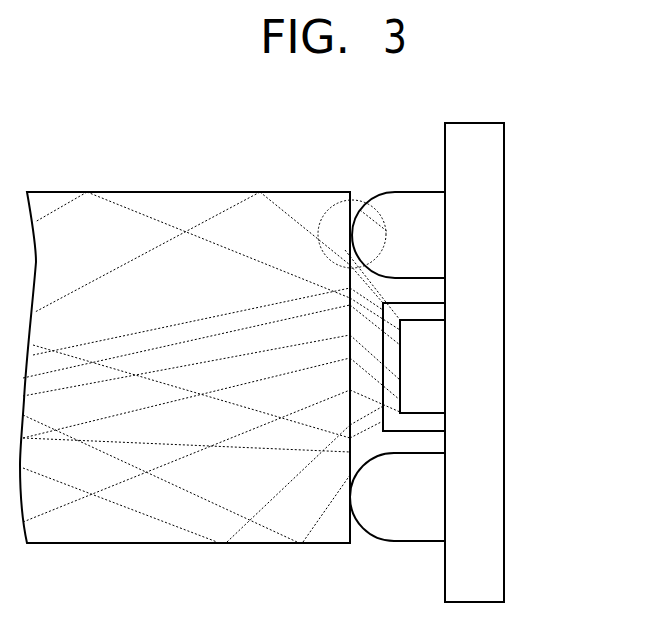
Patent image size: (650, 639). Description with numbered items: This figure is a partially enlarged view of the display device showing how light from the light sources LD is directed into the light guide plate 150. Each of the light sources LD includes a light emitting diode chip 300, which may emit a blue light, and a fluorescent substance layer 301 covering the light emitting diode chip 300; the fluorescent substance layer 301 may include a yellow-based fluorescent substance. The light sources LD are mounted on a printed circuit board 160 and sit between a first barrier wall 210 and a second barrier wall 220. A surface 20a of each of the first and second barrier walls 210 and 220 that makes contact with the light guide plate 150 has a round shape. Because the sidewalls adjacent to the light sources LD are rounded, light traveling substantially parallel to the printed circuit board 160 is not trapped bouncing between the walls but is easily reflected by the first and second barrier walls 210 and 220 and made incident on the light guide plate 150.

The light guide plate 150 is at (193, 200).
The surface 20a is at (357, 200).
The printed circuit board 160 is at (492, 185).
The first barrier wall 210 is at (433, 238).
The fluorescent substance layer 301 is at (435, 313).
The light emitting diode chip 300 is at (435, 365).
The light sources LD is at (502, 364).
The second barrier wall 220 is at (435, 497).